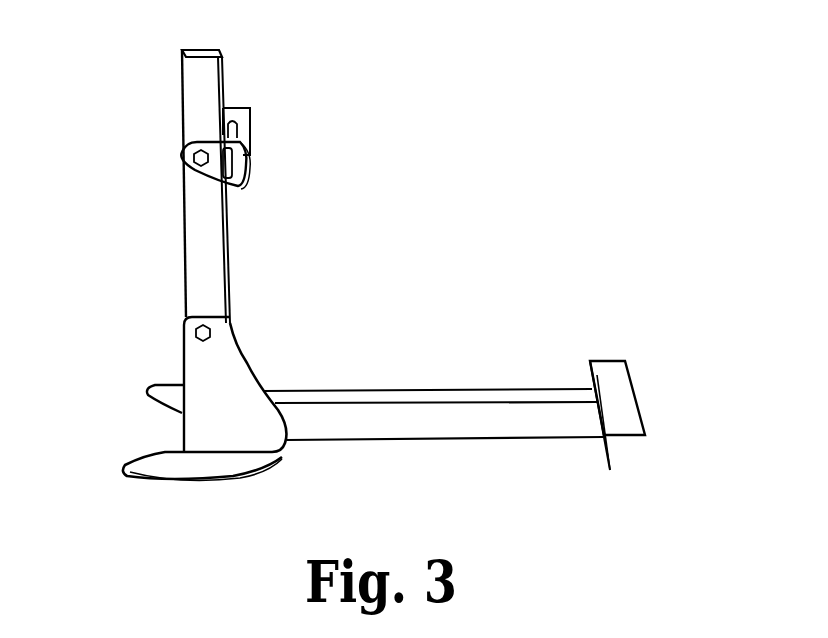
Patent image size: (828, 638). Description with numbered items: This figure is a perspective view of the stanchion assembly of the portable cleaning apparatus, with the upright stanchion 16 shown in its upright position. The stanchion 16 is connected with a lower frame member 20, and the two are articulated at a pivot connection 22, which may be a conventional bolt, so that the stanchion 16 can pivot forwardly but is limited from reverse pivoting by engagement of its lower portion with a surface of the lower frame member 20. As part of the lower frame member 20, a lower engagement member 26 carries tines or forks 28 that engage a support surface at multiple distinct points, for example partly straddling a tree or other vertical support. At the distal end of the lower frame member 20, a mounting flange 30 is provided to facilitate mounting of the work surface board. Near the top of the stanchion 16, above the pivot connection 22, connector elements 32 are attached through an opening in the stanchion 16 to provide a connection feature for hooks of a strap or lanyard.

The upright stanchion 16 is at (222, 60).
The lower frame member 20 is at (450, 440).
The pivot connection 22 is at (213, 330).
The lower engagement member 26 is at (165, 452).
The tines or forks 28 is at (124, 468).
The mounting flange 30 is at (622, 377).
The connector elements 32 is at (251, 122).